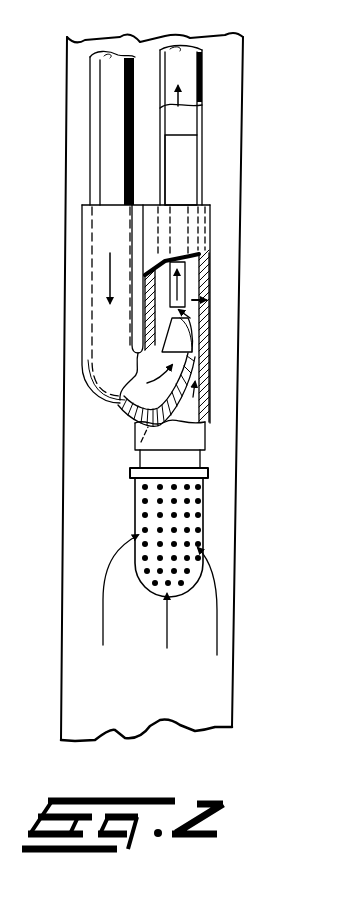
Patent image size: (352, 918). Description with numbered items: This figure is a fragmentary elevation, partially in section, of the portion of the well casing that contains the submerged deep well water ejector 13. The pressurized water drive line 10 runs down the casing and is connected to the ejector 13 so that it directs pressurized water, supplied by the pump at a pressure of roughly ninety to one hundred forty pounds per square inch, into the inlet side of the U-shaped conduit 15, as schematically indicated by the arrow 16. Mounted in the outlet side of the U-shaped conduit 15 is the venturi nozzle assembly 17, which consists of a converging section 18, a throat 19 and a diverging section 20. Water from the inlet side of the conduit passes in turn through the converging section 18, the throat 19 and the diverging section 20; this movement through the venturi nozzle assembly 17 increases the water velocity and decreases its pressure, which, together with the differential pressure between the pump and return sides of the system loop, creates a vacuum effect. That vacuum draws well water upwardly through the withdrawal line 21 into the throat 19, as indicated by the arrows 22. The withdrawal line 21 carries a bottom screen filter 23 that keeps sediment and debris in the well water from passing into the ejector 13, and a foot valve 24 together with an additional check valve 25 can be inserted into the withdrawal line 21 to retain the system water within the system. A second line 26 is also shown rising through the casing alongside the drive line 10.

The pressurized water drive line 10 is at (100, 112).
The second tube 26 is at (190, 124).
The well water ejector 13 is at (97, 328).
The arrow 16 is at (104, 265).
The U-shaped conduit 15 is at (105, 366).
The venturi nozzle assembly 17 is at (213, 300).
The diverging section 20 is at (183, 272).
The throat 19 is at (186, 311).
The converging section 18 is at (175, 338).
The arrows 22 is at (210, 401).
The withdrawal line 21 is at (183, 435).
The check valve 25 is at (150, 458).
The foot valve 24 is at (150, 472).
The bottom screen filter 23 is at (195, 515).